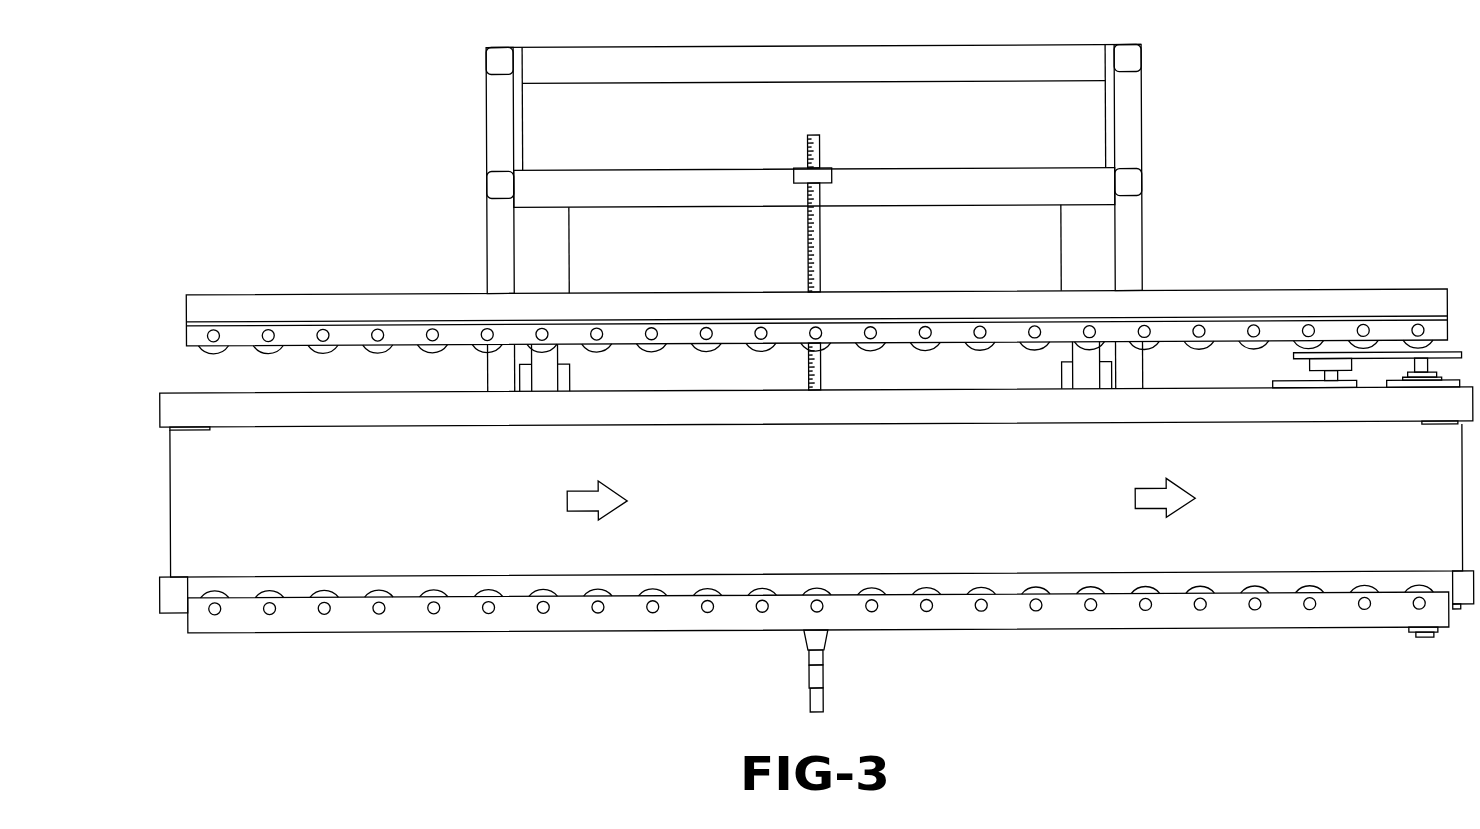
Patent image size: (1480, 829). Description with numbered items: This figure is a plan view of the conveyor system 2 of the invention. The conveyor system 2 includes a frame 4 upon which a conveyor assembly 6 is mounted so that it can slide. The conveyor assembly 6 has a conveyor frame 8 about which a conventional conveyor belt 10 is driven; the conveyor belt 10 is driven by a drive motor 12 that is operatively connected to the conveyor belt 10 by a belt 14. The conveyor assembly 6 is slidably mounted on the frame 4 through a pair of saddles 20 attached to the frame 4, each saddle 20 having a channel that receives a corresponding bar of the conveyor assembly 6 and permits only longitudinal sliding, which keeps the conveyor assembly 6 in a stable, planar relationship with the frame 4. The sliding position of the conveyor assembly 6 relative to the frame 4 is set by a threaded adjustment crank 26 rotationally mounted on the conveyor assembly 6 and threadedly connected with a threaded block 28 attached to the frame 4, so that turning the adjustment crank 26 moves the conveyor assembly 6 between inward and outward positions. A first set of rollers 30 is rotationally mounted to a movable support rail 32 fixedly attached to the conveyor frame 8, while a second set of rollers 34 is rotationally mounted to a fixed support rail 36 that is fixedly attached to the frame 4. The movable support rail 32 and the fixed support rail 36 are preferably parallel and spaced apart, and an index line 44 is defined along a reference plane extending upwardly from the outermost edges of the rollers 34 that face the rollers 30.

The conveyor system 2 is at (556, 720).
The frame 4 is at (484, 115).
The conveyor assembly 6 is at (512, 652).
The conveyor frame 8 is at (675, 398).
The conveyor belt 10 is at (800, 513).
The drive motor 12 is at (1293, 382).
The belt 14 is at (1382, 358).
The saddle 20 is at (520, 374).
The threaded adjustment crank 26 is at (822, 247).
The threaded block 28 is at (806, 178).
The first set of rollers 30 is at (277, 592).
The movable support rail 32 is at (301, 640).
The second set of rollers 34 is at (267, 351).
The fixed support rail 36 is at (1337, 330).
The index line 44 is at (187, 352).